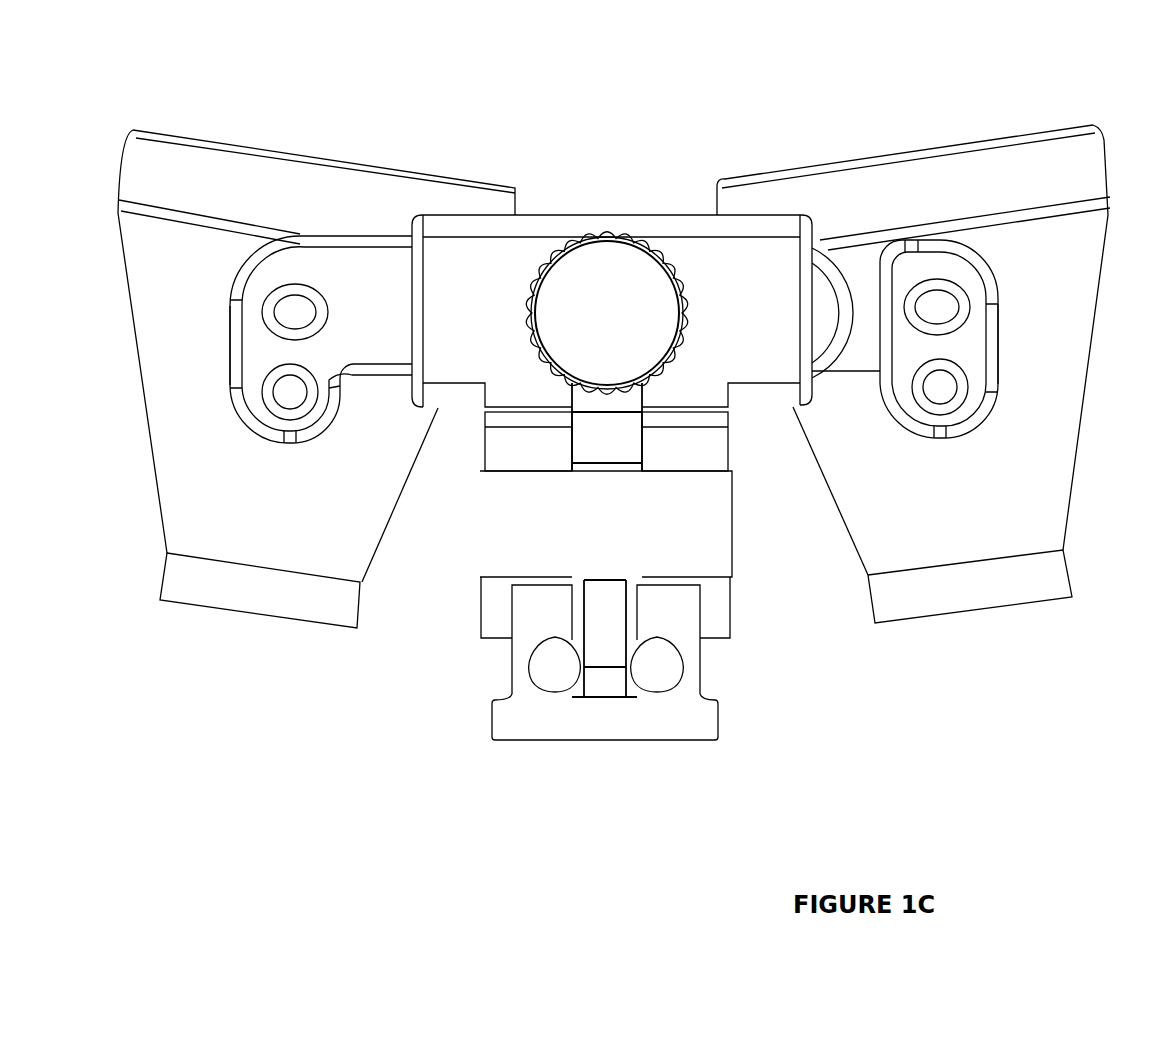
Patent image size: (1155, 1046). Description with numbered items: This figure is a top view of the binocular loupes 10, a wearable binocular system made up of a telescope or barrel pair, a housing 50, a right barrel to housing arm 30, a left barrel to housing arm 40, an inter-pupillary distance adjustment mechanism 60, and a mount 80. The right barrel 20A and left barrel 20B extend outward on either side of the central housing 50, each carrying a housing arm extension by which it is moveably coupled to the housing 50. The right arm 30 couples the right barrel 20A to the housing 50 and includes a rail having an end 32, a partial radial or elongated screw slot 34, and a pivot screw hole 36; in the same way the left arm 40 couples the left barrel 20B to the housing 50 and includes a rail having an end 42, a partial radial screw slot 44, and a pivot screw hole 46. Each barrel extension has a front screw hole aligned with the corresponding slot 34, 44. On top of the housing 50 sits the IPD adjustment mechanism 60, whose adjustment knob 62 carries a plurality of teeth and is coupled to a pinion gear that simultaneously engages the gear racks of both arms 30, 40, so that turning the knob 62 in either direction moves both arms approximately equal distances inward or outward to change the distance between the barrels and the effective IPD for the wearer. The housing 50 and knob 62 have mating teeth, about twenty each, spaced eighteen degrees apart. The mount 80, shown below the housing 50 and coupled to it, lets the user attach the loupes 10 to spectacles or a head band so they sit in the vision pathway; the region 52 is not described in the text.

The binocular loupes 10 is at (614, 477).
The right barrel 20A is at (965, 610).
The left barrel 20B is at (263, 615).
The right barrel to housing arm 30 is at (935, 440).
The rail end 32 is at (998, 325).
The partial radial screw slot 34 is at (935, 305).
The pivot screw hole 36 is at (937, 378).
The left barrel to housing arm 40 is at (295, 443).
The rail end 42 is at (228, 307).
The partial radial screw slot 44 is at (292, 308).
The pivot screw hole 46 is at (295, 385).
The housing 50 is at (708, 293).
The body face 52 is at (478, 310).
The inter-pupillary distance adjustment mechanism 60 is at (562, 232).
The adjustment knob 62 is at (648, 235).
The mount 80 is at (732, 536).